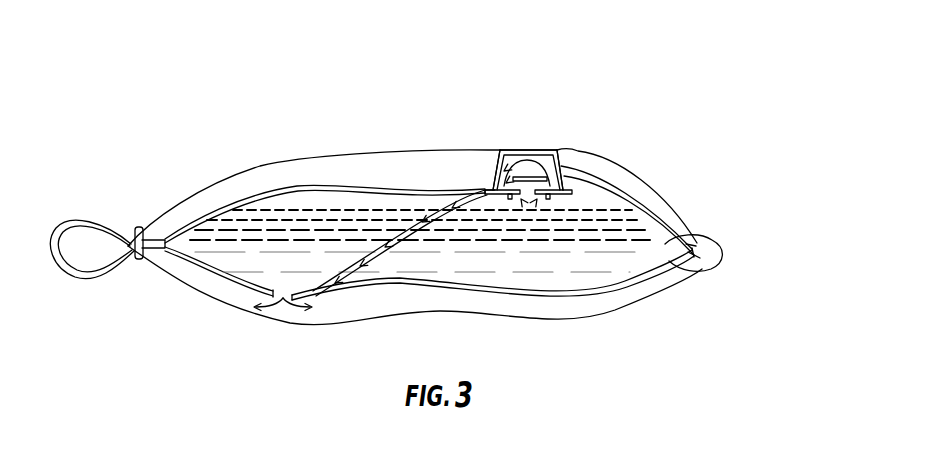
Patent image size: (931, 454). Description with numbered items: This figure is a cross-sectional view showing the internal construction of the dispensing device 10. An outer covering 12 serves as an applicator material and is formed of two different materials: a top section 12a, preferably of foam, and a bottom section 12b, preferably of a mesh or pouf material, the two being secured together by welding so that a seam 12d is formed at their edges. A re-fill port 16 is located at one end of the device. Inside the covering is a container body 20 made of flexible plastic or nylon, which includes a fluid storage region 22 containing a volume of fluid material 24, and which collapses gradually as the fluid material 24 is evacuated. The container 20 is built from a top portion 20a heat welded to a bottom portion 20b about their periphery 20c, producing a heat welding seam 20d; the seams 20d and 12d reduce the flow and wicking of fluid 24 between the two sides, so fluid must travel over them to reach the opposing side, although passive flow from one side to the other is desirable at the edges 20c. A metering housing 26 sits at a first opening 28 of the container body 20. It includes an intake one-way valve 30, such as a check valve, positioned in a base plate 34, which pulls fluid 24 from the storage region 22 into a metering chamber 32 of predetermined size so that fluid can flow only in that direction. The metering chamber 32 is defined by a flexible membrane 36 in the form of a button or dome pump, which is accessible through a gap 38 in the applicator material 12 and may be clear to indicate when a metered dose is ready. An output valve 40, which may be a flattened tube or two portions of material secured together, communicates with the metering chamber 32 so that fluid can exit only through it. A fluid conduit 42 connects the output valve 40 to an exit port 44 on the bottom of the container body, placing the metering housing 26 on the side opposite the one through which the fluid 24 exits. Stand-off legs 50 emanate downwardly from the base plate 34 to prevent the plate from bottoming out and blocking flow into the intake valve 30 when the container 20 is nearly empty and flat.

The dispensing device 10 is at (440, 120).
The outer covering 12 is at (633, 158).
The top section 12a is at (337, 163).
The bottom section 12b is at (616, 303).
The seam 12d is at (707, 253).
The re-fill port 16 is at (152, 240).
The container body 20 is at (662, 229).
The top portion 20a is at (654, 208).
The bottom portion 20b is at (641, 280).
The periphery 20c is at (701, 247).
The heat welding seam 20d is at (708, 258).
The fluid storage region 22 is at (691, 261).
The fluid material 24 is at (560, 256).
The metering housing 26 is at (568, 144).
The first opening 28 is at (497, 178).
The intake one-way valve 30 is at (544, 152).
The metering chamber 32 is at (536, 150).
The base plate 34 is at (568, 185).
The flexible membrane 36 is at (516, 150).
The gap 38 is at (492, 183).
The output valve 40 is at (487, 186).
The fluid conduit 42 is at (383, 271).
The exit port 44 is at (283, 298).
The stand-off legs 50 is at (548, 199).